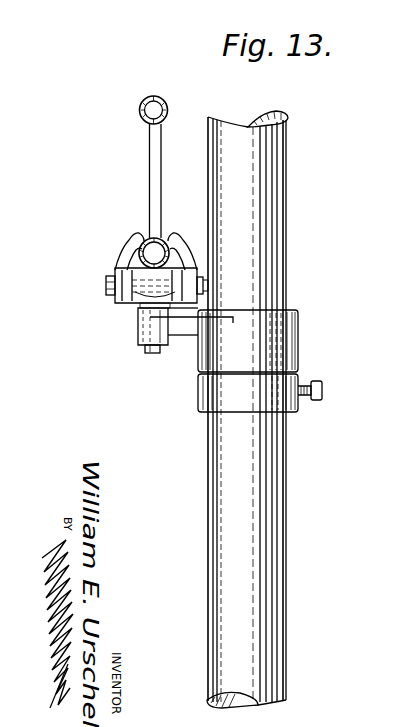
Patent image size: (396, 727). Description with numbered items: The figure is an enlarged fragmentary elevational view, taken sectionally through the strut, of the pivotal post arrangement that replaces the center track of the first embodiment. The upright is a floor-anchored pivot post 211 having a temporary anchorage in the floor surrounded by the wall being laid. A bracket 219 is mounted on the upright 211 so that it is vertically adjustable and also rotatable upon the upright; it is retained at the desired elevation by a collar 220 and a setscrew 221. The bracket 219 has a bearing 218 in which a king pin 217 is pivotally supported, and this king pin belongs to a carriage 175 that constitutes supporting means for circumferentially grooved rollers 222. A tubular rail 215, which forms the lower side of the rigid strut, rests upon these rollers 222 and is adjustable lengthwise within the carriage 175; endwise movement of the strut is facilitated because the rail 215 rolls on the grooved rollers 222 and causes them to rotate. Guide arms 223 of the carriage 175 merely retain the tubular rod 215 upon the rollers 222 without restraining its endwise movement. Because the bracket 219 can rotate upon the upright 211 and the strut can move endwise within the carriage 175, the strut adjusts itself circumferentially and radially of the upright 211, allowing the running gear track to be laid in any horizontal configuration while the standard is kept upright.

The pivot post 211 is at (284, 568).
The tubular rail 215 is at (139, 251).
The king pin 217 is at (146, 353).
The bearing 218 is at (166, 348).
The bracket 219 is at (298, 315).
The collar 220 is at (200, 413).
The setscrew 221 is at (322, 386).
The circumferentially grooved rollers 222 is at (106, 292).
The guide arms 223 is at (132, 240).
The carriage 175 is at (110, 267).